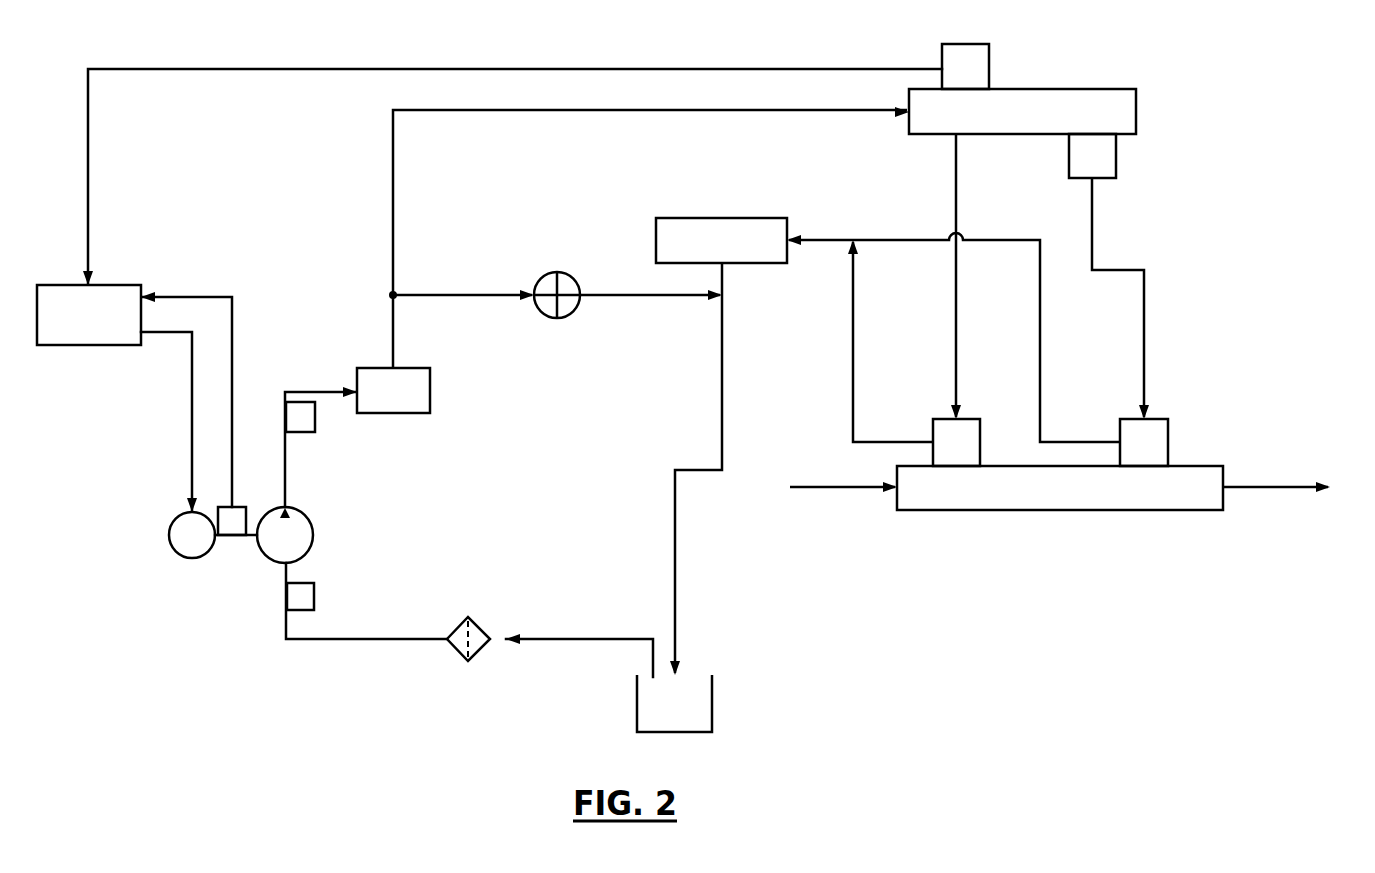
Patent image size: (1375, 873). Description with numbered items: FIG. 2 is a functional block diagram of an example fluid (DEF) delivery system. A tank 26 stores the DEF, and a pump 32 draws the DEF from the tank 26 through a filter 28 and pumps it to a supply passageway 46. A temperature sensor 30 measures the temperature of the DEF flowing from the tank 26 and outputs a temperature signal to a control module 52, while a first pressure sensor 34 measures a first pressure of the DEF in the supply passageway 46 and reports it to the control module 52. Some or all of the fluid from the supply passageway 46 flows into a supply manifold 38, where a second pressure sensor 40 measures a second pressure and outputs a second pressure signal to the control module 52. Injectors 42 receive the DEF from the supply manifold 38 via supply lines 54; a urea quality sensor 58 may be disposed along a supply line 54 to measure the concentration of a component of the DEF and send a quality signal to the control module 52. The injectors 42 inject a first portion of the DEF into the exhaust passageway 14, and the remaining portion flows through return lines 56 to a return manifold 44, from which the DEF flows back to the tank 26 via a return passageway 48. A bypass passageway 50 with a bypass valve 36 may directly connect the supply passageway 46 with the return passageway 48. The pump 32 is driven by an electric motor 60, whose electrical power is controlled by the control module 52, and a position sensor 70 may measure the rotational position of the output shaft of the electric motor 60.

The exhaust passageway 14 is at (1058, 510).
The tank 26 is at (712, 703).
The filter 28 is at (480, 629).
The temperature sensor 30 is at (315, 598).
The pump 32 is at (313, 530).
The first pressure sensor 34 is at (315, 420).
The bypass valve 36 is at (558, 318).
The supply manifold 38 is at (1078, 89).
The second pressure sensor 40 is at (989, 66).
The injectors 42 is at (940, 419).
The return manifold 44 is at (716, 218).
The supply passageway 46 is at (393, 205).
The return passageway 48 is at (722, 372).
The bypass passageway 50 is at (452, 297).
The control module 52 is at (88, 345).
The supply lines 54 is at (956, 305).
The return lines 56 is at (890, 241).
The urea quality sensor 58 is at (1116, 155).
The electric motor 60 is at (190, 558).
The position sensor 70 is at (238, 507).